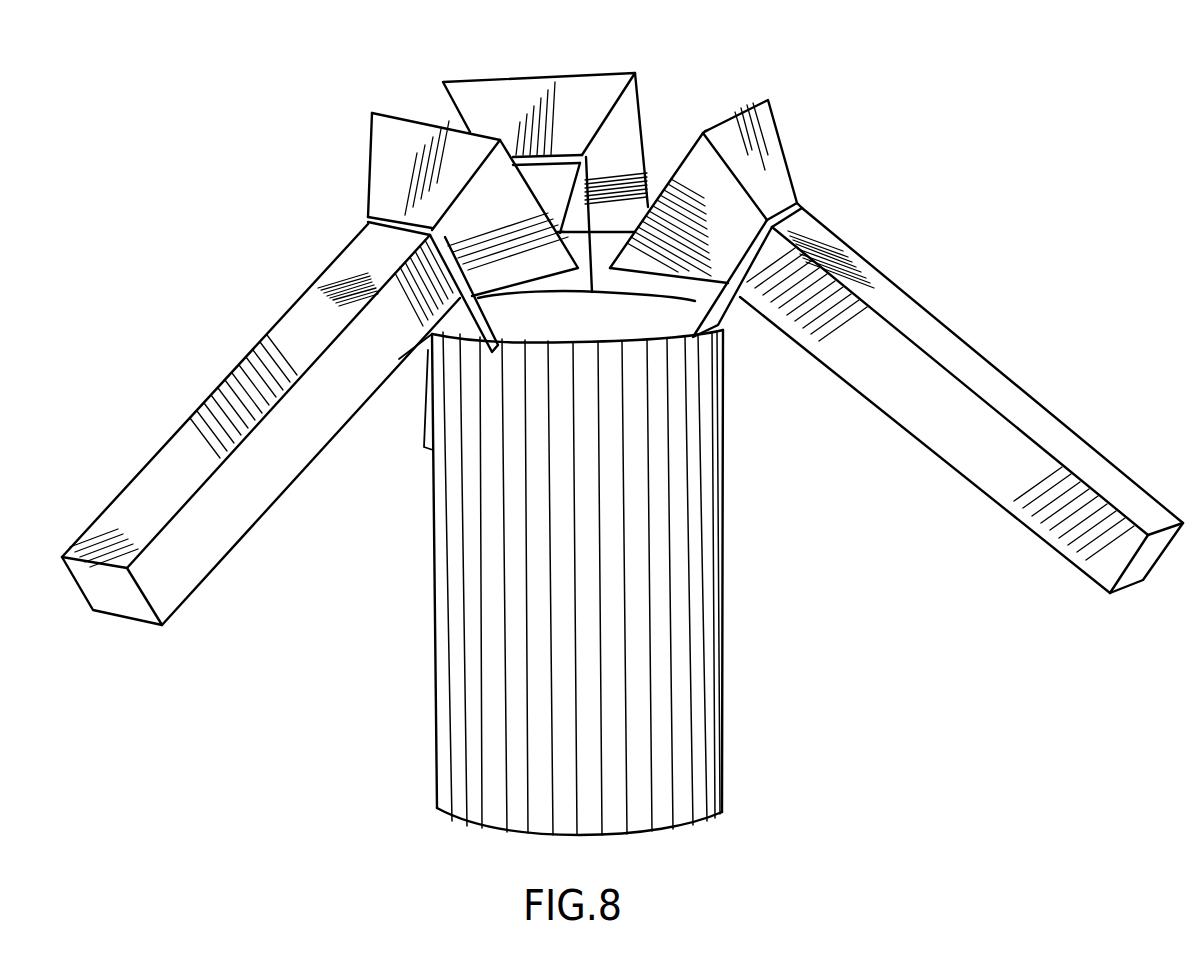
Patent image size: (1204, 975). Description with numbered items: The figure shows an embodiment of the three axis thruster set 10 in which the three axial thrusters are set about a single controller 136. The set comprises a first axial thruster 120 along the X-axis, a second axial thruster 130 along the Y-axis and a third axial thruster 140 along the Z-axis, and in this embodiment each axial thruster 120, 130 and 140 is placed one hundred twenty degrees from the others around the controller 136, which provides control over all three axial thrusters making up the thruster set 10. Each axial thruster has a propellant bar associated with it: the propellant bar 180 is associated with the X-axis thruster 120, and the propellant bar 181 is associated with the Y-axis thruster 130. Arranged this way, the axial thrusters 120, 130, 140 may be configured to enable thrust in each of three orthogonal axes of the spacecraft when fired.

The three axis thruster set 10 is at (298, 74).
The first axial thruster 120 is at (898, 346).
The second axial thruster 130 is at (320, 369).
The controller 136 is at (713, 641).
The third axial thruster 140 is at (563, 100).
The propellant bar 180 is at (1047, 427).
The propellant bar 181 is at (217, 403).